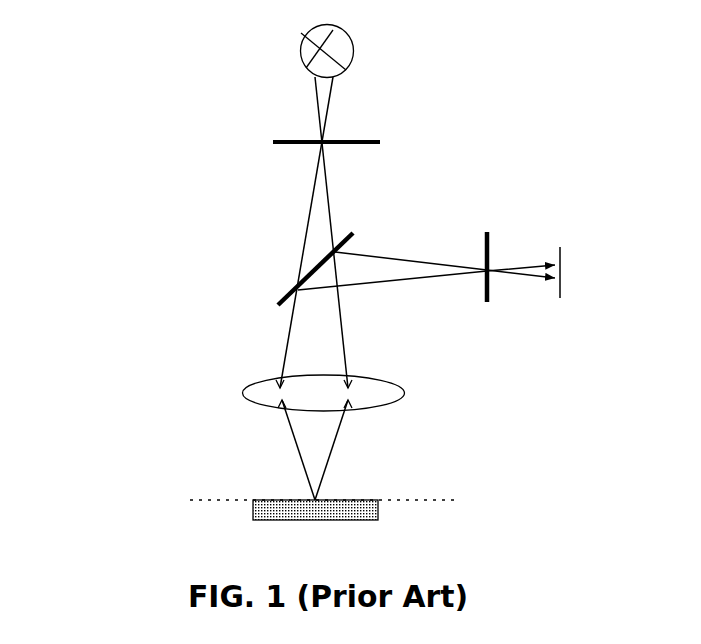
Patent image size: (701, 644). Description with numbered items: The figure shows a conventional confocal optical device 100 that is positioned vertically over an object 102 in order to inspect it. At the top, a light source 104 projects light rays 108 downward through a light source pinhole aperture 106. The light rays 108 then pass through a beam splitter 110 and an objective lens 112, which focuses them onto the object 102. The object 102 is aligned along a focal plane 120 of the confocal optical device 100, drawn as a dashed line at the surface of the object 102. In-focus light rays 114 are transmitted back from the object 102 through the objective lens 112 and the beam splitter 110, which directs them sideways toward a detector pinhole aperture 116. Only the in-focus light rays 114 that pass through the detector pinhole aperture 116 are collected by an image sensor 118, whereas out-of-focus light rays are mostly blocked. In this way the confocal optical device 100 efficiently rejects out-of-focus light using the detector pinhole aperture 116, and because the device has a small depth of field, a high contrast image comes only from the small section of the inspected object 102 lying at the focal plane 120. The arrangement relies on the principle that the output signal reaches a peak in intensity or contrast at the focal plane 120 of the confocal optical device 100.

The confocal optical device 100 is at (122, 143).
The object 102 is at (277, 498).
The light source 104 is at (283, 42).
The light source pinhole aperture 106 is at (385, 140).
The light rays 108 is at (305, 190).
The beam splitter 110 is at (357, 231).
The objective lens 112 is at (262, 387).
The in-focus light rays 114 is at (432, 283).
The detector pinhole aperture 116 is at (515, 242).
The image sensor 118 is at (572, 285).
The focal plane 120 is at (460, 500).